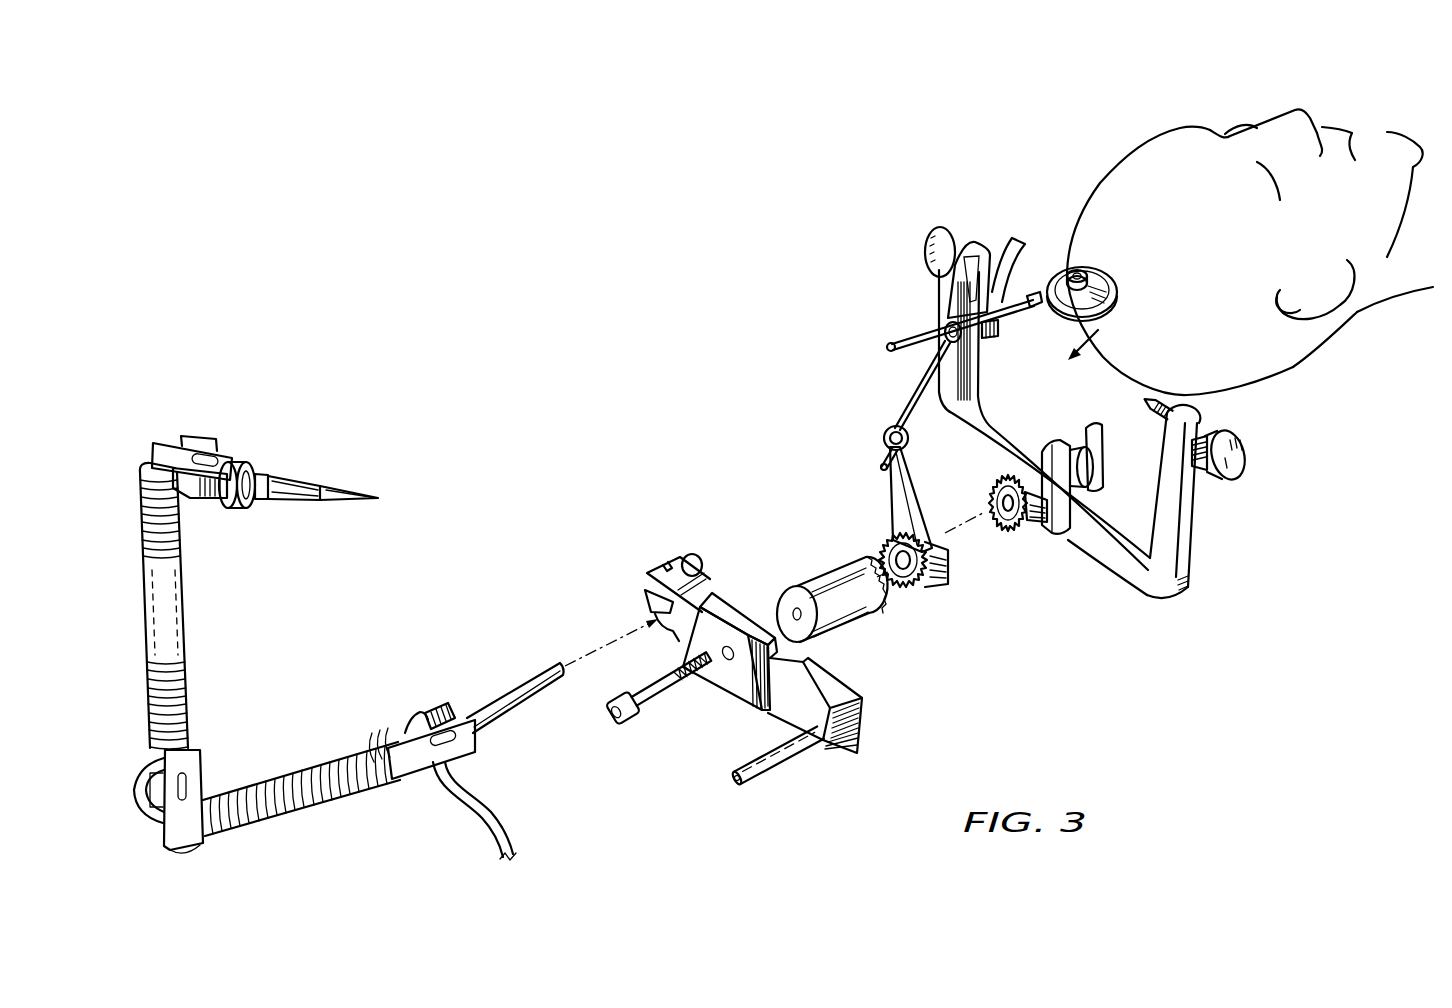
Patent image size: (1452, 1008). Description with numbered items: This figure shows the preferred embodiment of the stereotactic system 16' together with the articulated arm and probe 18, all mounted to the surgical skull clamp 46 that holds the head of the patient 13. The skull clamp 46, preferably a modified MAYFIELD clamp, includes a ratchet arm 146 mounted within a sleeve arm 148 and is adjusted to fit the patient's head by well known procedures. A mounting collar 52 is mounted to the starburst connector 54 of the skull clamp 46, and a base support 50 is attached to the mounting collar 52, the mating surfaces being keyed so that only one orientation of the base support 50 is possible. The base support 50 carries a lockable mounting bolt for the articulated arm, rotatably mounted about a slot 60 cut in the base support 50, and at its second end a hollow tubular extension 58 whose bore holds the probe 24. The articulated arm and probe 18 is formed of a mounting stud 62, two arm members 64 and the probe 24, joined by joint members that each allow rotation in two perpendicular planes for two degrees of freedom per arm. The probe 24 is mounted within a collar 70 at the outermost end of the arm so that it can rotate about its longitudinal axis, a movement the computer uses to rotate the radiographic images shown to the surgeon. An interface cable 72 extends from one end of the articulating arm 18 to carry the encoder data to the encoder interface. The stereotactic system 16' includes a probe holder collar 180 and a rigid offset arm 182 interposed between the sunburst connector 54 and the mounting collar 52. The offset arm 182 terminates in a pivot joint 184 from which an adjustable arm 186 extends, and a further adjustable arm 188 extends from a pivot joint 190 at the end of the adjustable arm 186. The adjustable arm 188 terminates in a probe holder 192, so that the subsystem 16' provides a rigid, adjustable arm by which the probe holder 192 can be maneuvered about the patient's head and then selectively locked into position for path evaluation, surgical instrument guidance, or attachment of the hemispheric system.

The patient 13 is at (1386, 346).
The stereotactic system 16' is at (1060, 427).
The articulated arm and probe 18 is at (264, 683).
The probe 24 is at (304, 478).
The surgical skull clamp 46 is at (1218, 537).
The base support 50 is at (871, 688).
The mounting collar 52 is at (817, 581).
The starburst connector 54 is at (1046, 524).
The hollow tubular extension 58 is at (762, 777).
The slot 60 is at (650, 575).
The mounting stud 62 is at (541, 676).
The arm members 64 is at (178, 540).
The collar 70 is at (236, 467).
The interface cable 72 is at (498, 818).
The ratchet arm 146 is at (1117, 560).
The sleeve arm 148 is at (992, 413).
The probe holder collar 180 is at (928, 581).
The rigid offset arm 182 is at (912, 501).
The pivot joint 184 is at (880, 440).
The adjustable arm 186 is at (927, 381).
The adjustable arm 188 is at (942, 325).
The pivot joint 190 is at (1008, 318).
The probe holder 192 is at (1126, 278).